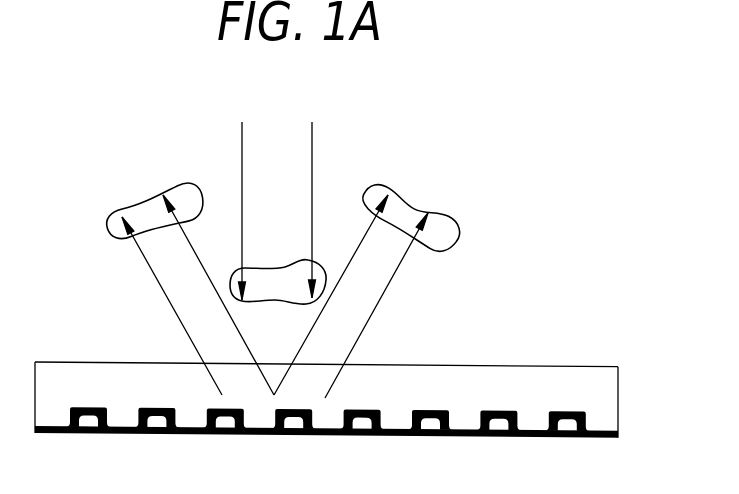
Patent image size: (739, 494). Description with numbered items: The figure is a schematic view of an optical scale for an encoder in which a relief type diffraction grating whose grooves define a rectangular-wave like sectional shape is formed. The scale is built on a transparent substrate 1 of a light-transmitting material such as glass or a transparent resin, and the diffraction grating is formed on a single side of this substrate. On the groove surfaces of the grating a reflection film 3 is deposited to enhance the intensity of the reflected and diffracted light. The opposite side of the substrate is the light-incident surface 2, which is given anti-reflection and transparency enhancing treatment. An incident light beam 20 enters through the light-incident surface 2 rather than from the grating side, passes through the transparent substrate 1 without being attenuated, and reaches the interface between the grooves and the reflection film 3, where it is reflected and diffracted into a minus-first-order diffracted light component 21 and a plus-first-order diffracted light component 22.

The transparent substrate 1 is at (610, 383).
The light-incident surface 2 is at (556, 365).
The reflection film 3 is at (597, 434).
The incident light beam 20 is at (313, 177).
The -1st-order diffracted light component 21 is at (154, 272).
The +1st-order diffracted light component 22 is at (395, 280).